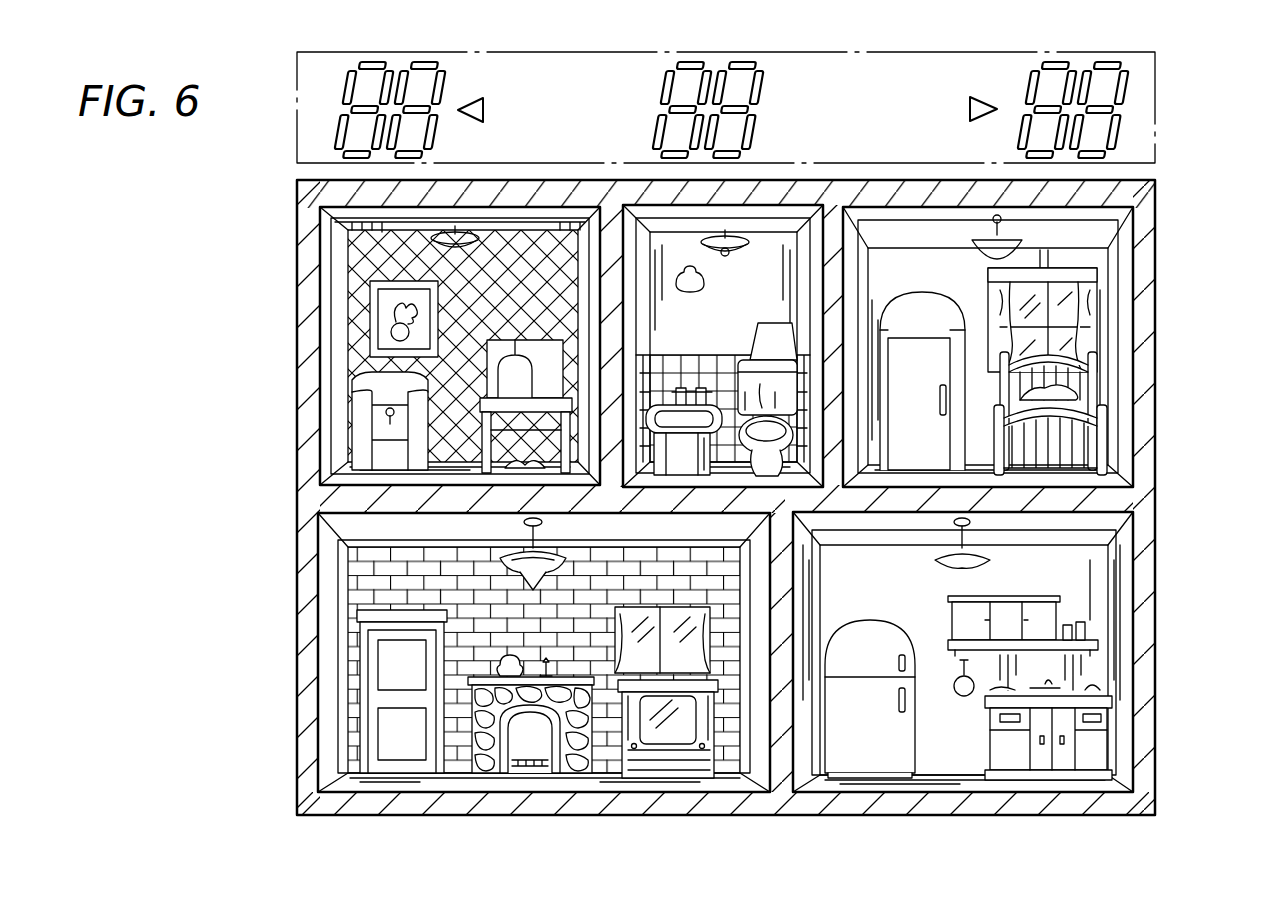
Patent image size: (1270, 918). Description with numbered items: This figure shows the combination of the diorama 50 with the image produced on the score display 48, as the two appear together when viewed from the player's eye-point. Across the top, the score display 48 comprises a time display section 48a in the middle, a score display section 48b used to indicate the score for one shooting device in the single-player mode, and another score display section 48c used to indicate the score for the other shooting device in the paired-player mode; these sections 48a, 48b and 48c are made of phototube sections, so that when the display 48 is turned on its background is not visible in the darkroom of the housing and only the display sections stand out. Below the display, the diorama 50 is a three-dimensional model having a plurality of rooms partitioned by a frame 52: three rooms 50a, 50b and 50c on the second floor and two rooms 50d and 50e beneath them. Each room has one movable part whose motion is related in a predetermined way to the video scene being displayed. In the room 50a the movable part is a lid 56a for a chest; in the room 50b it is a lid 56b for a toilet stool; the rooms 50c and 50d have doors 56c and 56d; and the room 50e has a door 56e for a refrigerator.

The score display 48 is at (747, 90).
The time display section 48a is at (748, 58).
The score display section 48b is at (408, 58).
The score display section 48c is at (1062, 58).
The diorama 50 is at (717, 510).
The room 50a is at (409, 346).
The room 50b is at (920, 326).
The room 50c is at (1025, 347).
The room 50d is at (494, 652).
The room 50e is at (1001, 683).
The frame 52 is at (782, 745).
The lid for a chest 56a is at (355, 385).
The lid for a toilet stool 56b is at (737, 390).
The door 56c is at (937, 363).
The door 56d is at (400, 653).
The door for a refrigerator 56e is at (890, 738).